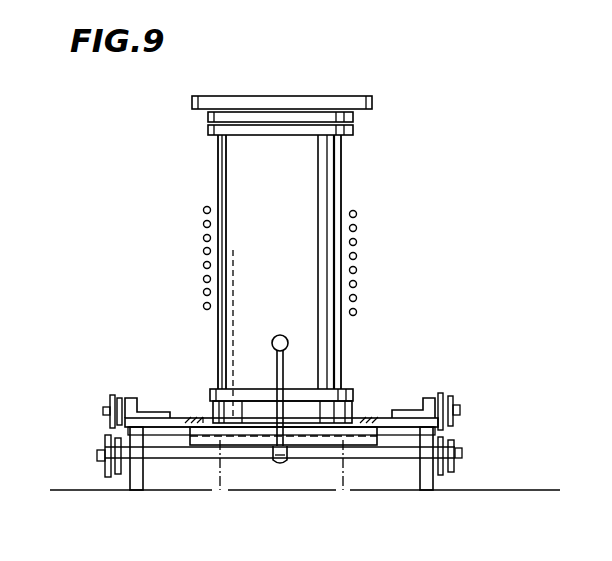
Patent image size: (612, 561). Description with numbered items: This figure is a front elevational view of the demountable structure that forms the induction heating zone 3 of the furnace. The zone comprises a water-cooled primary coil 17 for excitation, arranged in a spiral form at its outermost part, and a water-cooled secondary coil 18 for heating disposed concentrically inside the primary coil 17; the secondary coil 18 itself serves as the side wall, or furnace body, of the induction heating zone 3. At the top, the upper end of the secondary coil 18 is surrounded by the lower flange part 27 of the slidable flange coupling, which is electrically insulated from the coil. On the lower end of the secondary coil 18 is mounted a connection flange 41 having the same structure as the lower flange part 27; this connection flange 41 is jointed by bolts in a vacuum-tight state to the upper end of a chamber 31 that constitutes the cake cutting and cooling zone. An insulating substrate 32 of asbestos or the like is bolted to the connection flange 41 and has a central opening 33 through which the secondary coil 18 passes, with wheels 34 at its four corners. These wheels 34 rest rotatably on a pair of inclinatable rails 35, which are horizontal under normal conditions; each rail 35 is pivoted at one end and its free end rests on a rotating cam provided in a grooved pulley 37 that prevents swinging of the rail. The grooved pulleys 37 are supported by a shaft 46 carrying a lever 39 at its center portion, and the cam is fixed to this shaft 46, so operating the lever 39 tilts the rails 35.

The induction heating zone 3 is at (388, 176).
The primary coil 17 is at (203, 284).
The secondary coil 18 is at (289, 233).
The lower flange part 27 is at (207, 117).
The chamber 31 is at (402, 490).
The insulating substrate 32 is at (182, 417).
The opening 33 is at (363, 414).
The wheels 34 is at (108, 402).
The inclinatable rails 35 is at (110, 435).
The grooved pulley 37 is at (103, 456).
The lever 39 is at (284, 365).
The connection flange 41 is at (244, 398).
The shaft 46 is at (263, 460).